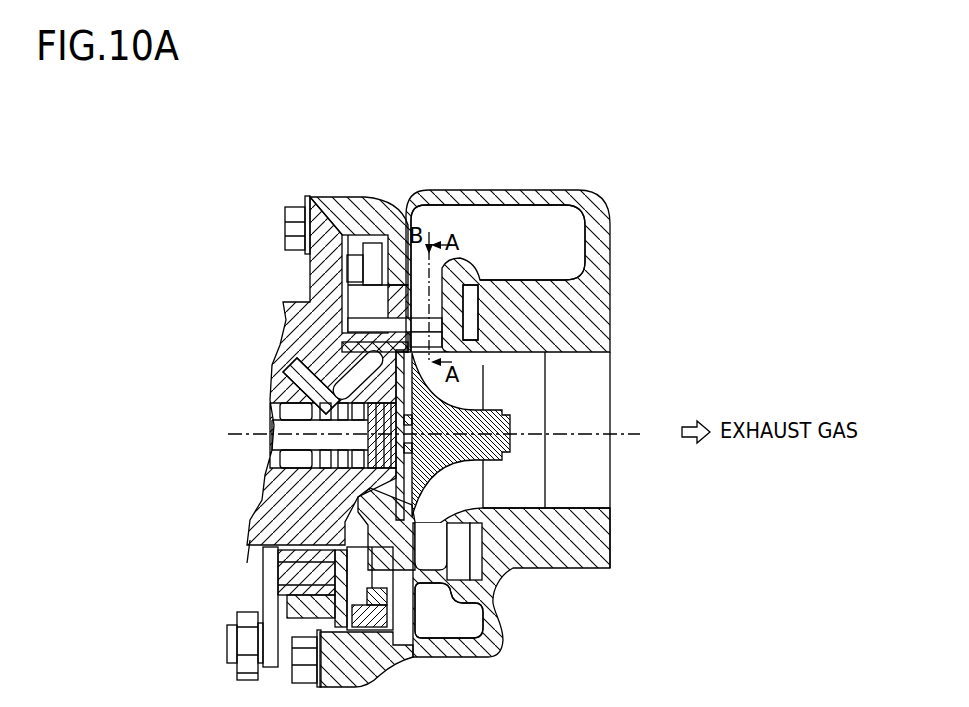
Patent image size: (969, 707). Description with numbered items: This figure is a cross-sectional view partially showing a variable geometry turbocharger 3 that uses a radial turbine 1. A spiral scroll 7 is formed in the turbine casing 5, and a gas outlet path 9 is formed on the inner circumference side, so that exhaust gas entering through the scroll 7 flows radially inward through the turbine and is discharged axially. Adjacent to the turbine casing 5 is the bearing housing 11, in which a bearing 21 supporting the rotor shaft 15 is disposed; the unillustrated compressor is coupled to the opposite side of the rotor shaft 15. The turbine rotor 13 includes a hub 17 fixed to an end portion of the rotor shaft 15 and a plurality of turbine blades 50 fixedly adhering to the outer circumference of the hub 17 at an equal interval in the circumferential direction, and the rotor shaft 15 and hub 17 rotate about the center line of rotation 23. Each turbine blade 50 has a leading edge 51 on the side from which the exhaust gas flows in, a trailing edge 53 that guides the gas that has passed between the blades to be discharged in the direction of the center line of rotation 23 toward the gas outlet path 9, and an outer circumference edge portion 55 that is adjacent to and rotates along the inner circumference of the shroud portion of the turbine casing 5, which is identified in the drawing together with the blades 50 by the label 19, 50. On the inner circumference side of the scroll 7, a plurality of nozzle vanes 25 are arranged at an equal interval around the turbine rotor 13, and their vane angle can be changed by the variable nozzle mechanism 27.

The radial turbine 1 is at (513, 385).
The variable geometry turbocharger 3 is at (561, 371).
The turbine casing 5 is at (598, 226).
The scroll 7 is at (530, 215).
The gas outlet path 9 is at (600, 492).
The bearing housing 11 is at (300, 316).
The turbine rotor 13 is at (472, 487).
The rotor shaft 15 is at (413, 523).
The hub 17 is at (505, 460).
The shroud 19 is at (582, 472).
The turbine blades 50 is at (473, 392).
The bearing 21 is at (337, 455).
The center line of rotation 23 is at (248, 434).
The nozzle vanes 25 is at (432, 318).
The variable nozzle mechanism 27 is at (478, 220).
The leading edge 51 is at (440, 340).
The trailing edge 53 is at (540, 370).
The outer circumference edge portion 55 is at (480, 337).